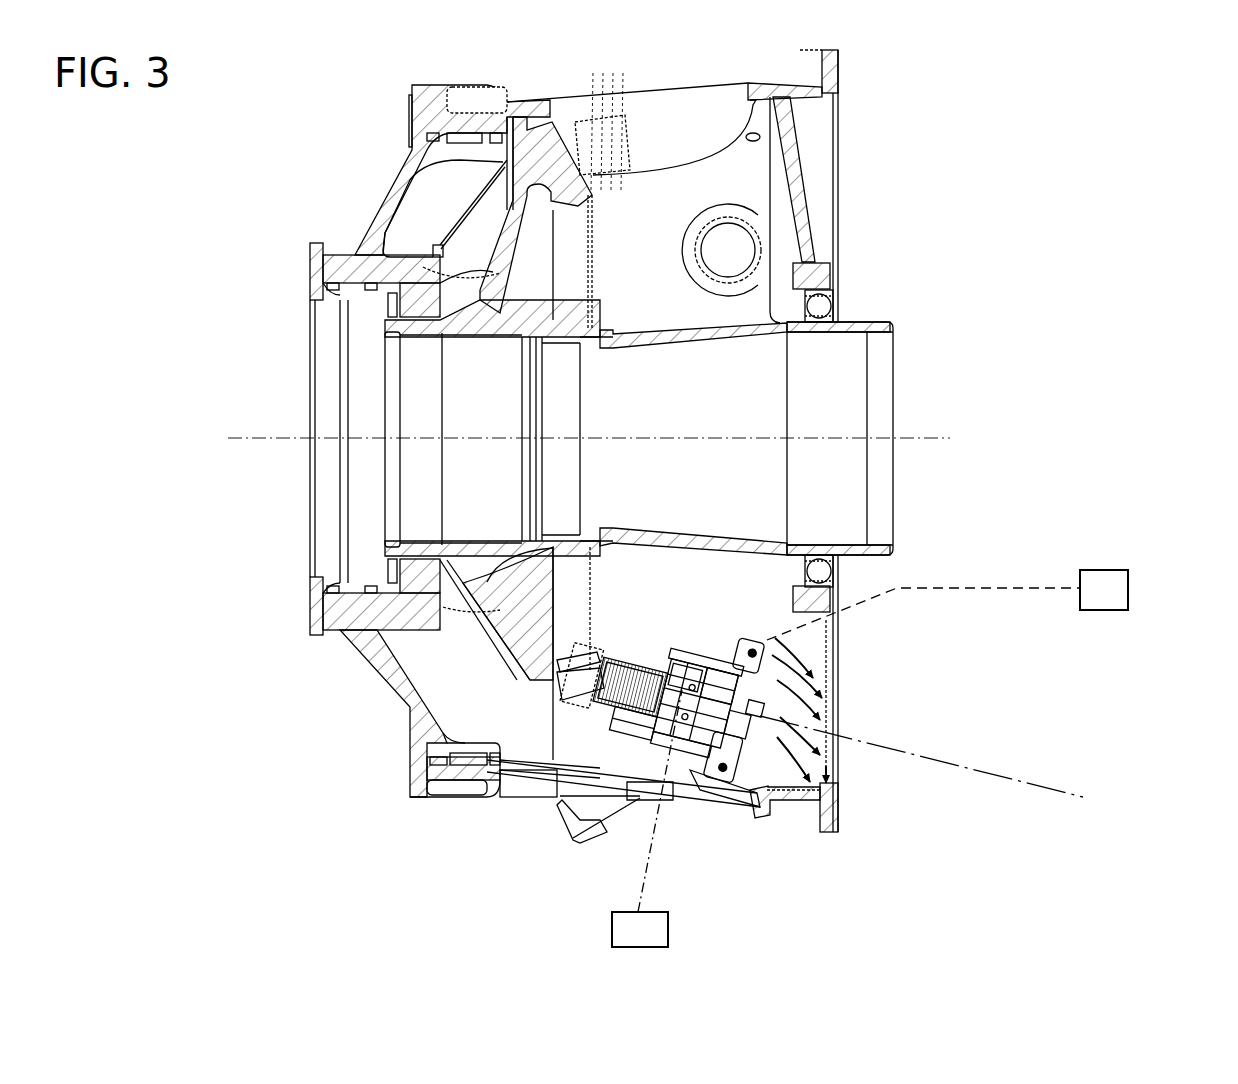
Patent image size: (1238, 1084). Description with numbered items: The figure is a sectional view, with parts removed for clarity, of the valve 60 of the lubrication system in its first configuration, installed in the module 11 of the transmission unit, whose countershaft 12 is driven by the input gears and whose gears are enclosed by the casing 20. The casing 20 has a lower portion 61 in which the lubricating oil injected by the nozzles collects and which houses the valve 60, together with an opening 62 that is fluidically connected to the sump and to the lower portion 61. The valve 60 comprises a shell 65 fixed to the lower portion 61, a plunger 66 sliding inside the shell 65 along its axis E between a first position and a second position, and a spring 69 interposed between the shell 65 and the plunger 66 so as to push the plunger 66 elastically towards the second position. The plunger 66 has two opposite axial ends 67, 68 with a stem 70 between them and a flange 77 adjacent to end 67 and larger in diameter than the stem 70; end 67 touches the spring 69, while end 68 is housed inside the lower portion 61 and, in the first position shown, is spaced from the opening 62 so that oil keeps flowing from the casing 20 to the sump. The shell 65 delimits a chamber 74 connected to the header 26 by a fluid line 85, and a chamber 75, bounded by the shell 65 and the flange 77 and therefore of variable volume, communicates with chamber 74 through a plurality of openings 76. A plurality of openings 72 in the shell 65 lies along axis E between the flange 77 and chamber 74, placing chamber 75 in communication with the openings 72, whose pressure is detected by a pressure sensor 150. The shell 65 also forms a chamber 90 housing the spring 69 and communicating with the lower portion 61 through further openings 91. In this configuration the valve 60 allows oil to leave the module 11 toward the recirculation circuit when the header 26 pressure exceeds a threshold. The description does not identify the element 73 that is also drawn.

The module 11 is at (953, 130).
The countershaft 12 is at (862, 320).
The casing 20 is at (417, 200).
The header 26 is at (1110, 584).
The valve 60 is at (634, 612).
The lower portion 61 is at (840, 752).
The opening 62 is at (827, 683).
The shell 65 is at (710, 672).
The plunger 66 is at (640, 835).
The axial end 67 is at (684, 663).
The axial end 68 is at (760, 760).
The spring 69 is at (590, 666).
The stem 70 is at (686, 770).
The openings 72 is at (696, 668).
The fastening element 73 is at (720, 780).
The chamber 74 is at (745, 710).
The chamber 75 is at (747, 640).
The openings 76 is at (740, 728).
The flange 77 is at (636, 742).
The fluid line 85 is at (993, 590).
The chamber 90 is at (590, 684).
The openings 91 is at (588, 665).
The pressure sensor 150 is at (620, 924).
The axis E is at (940, 762).